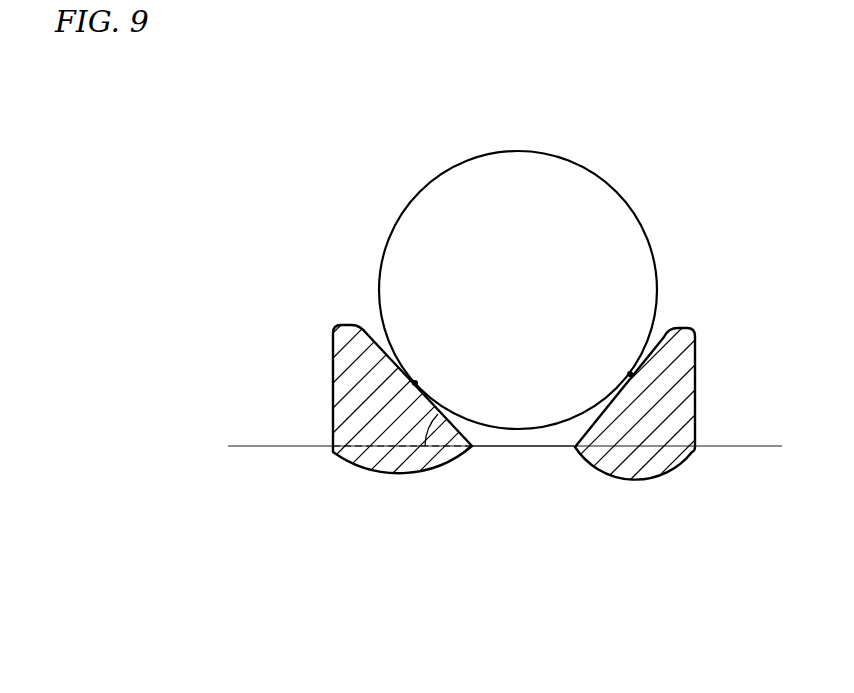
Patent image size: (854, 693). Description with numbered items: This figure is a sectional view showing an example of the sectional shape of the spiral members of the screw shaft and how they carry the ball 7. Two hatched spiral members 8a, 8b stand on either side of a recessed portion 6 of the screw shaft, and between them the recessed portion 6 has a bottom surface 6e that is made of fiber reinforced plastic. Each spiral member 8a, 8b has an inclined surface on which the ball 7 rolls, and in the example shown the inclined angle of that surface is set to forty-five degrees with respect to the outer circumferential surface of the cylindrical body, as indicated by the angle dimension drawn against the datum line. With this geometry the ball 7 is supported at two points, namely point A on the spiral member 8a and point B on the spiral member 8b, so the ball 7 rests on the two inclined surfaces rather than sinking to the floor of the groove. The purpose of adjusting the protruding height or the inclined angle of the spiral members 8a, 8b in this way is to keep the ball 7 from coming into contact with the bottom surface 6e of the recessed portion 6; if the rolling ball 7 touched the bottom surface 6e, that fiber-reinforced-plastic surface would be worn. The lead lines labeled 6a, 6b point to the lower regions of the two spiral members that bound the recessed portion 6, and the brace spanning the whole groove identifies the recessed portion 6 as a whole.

The ball 7 is at (386, 244).
The spiral member 8a is at (362, 440).
The spiral member 8b is at (677, 441).
The first raceway surface 6a is at (394, 477).
The second raceway surface 6b is at (645, 480).
The bottom surface of the recessed portion 6e is at (515, 448).
The recessed portion 6 is at (673, 560).
The point A is at (420, 378).
The point B is at (626, 371).